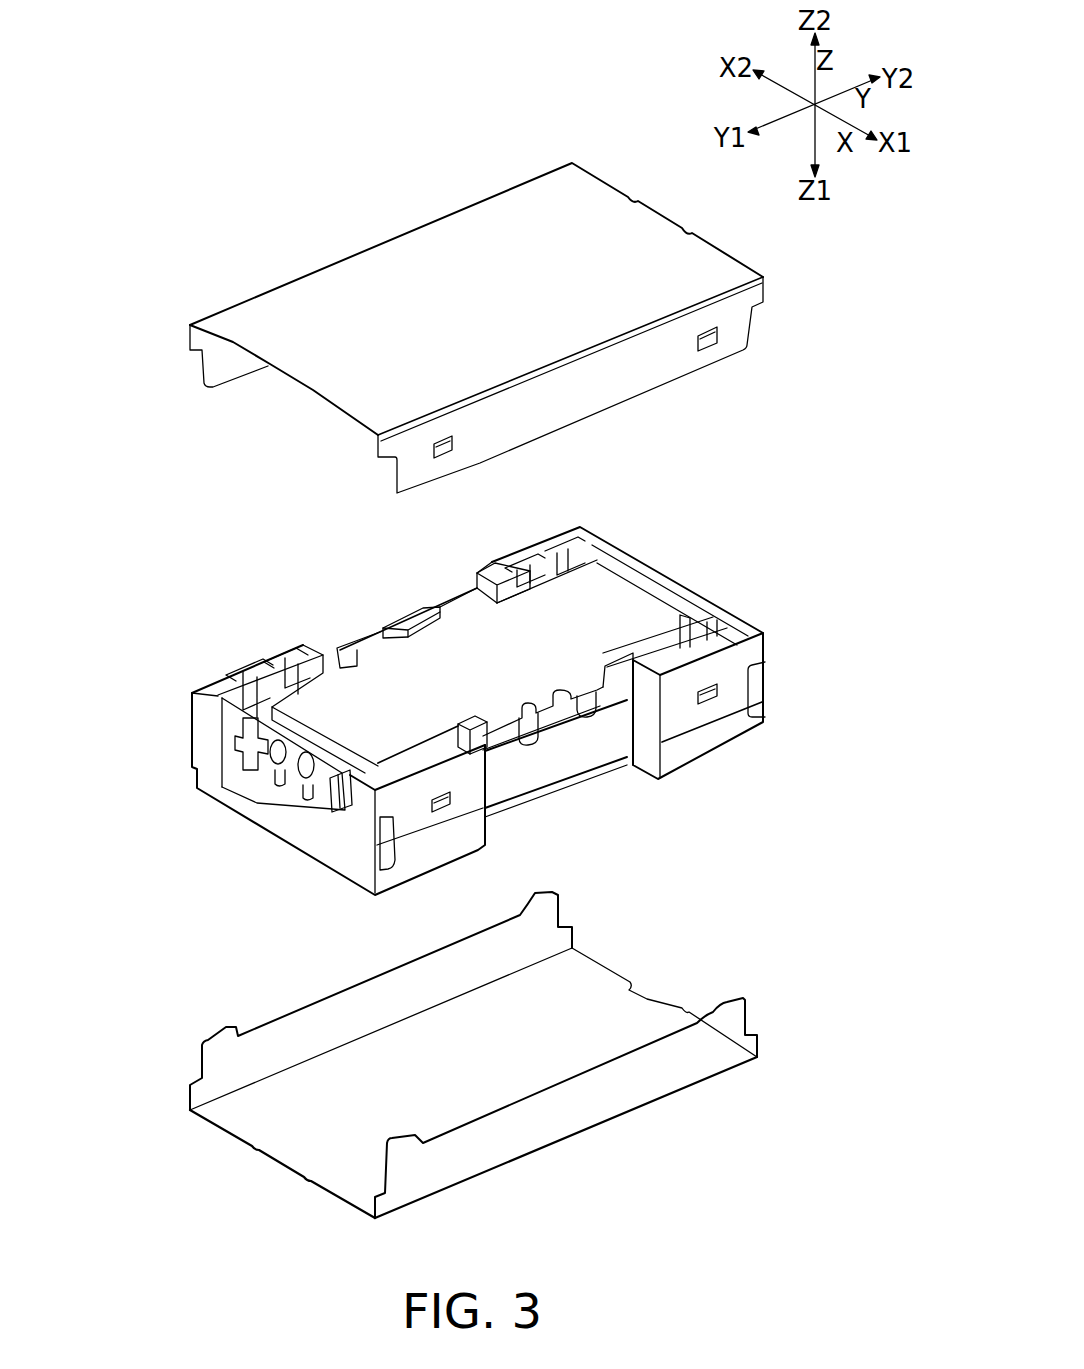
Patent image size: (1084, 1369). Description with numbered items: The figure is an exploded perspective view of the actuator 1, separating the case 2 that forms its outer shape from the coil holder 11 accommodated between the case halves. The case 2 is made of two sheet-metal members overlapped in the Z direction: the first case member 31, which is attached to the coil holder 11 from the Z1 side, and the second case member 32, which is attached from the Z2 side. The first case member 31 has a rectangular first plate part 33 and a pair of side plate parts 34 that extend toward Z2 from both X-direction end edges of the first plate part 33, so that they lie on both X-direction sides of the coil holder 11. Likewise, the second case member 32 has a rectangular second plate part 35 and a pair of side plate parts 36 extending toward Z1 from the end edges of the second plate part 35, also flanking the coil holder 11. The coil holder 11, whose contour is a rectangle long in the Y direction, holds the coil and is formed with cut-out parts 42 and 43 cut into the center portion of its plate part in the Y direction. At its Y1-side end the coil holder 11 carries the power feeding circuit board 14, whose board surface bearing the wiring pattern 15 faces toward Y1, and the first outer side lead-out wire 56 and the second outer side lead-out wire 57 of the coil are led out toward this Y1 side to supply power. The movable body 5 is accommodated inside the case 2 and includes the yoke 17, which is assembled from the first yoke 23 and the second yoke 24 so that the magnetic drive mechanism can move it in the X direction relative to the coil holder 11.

The actuator 1 is at (150, 168).
The case 2 is at (854, 363).
The movable body 5 is at (350, 630).
The coil holder 11 is at (597, 530).
The power feeding circuit board 14 is at (238, 773).
The wiring pattern 15 is at (220, 724).
The yoke 17 is at (748, 490).
The first yoke 23 is at (585, 738).
The second yoke 24 is at (585, 607).
The first case member 31 is at (685, 1005).
The second case member 32 is at (752, 333).
The first plate part 33 is at (305, 1153).
The side plate parts 34 is at (298, 1008).
The second plate part 35 is at (388, 300).
The side plate parts 36 is at (228, 372).
The cut-out part 42 is at (631, 748).
The cut-out part 43 is at (475, 590).
The first outer side lead-out wire 56 is at (309, 788).
The second outer side lead-out wire 57 is at (280, 782).